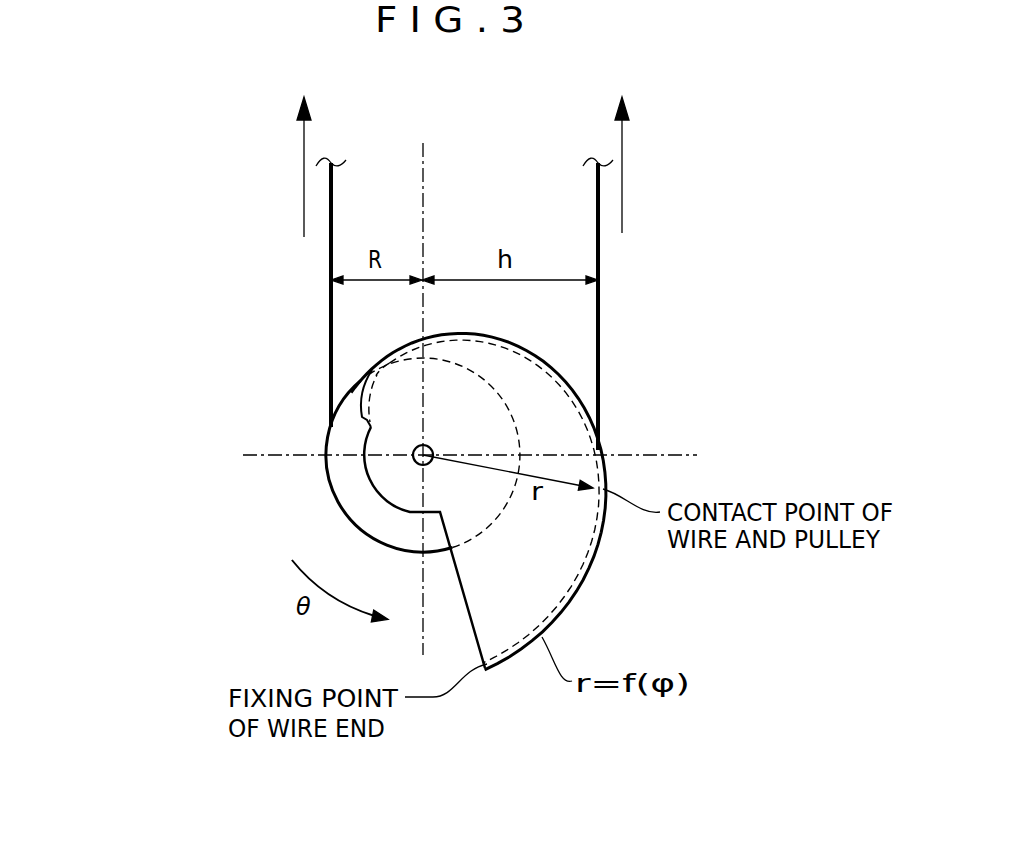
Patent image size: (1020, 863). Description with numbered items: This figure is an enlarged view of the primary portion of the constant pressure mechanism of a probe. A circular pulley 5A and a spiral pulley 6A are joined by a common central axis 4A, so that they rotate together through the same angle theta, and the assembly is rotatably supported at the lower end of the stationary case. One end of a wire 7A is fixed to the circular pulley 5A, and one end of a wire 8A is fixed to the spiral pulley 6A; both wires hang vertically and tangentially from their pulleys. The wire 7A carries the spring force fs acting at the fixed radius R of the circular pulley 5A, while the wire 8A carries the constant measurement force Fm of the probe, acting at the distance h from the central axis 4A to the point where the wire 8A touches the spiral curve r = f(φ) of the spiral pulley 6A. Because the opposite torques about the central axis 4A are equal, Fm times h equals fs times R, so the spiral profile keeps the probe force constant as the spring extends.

The central axis 4A is at (413, 450).
The circular pulley 5A is at (352, 490).
The spiral pulley 6A is at (557, 558).
The wire 7A is at (331, 319).
The wire 8A is at (598, 313).